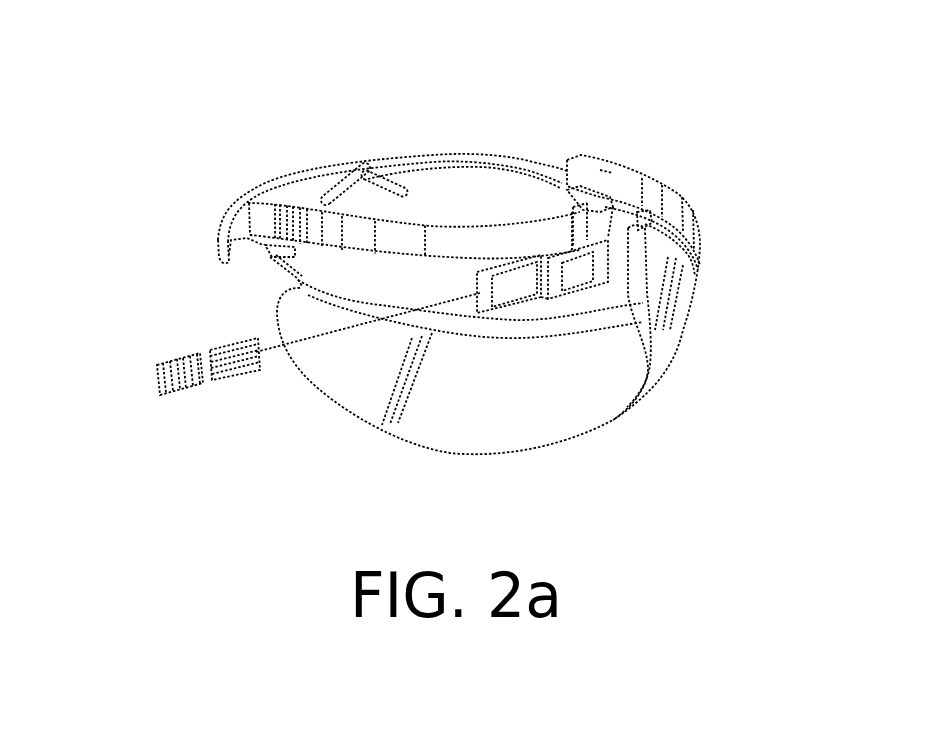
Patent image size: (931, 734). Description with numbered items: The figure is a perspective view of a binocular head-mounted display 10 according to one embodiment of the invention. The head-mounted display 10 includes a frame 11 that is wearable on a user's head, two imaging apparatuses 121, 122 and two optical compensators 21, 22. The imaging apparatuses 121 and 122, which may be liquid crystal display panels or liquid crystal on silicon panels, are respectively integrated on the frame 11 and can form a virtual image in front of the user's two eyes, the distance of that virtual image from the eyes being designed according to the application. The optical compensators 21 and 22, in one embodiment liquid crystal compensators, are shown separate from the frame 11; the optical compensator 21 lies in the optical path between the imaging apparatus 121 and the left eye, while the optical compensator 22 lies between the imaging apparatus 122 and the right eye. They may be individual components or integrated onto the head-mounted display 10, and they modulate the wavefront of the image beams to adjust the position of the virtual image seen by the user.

The head-mounted display 10 is at (245, 78).
The frame 11 is at (618, 168).
The optical compensator 21 is at (183, 360).
The optical compensator 22 is at (233, 373).
The imaging apparatus 121 is at (518, 297).
The imaging apparatus 122 is at (583, 282).